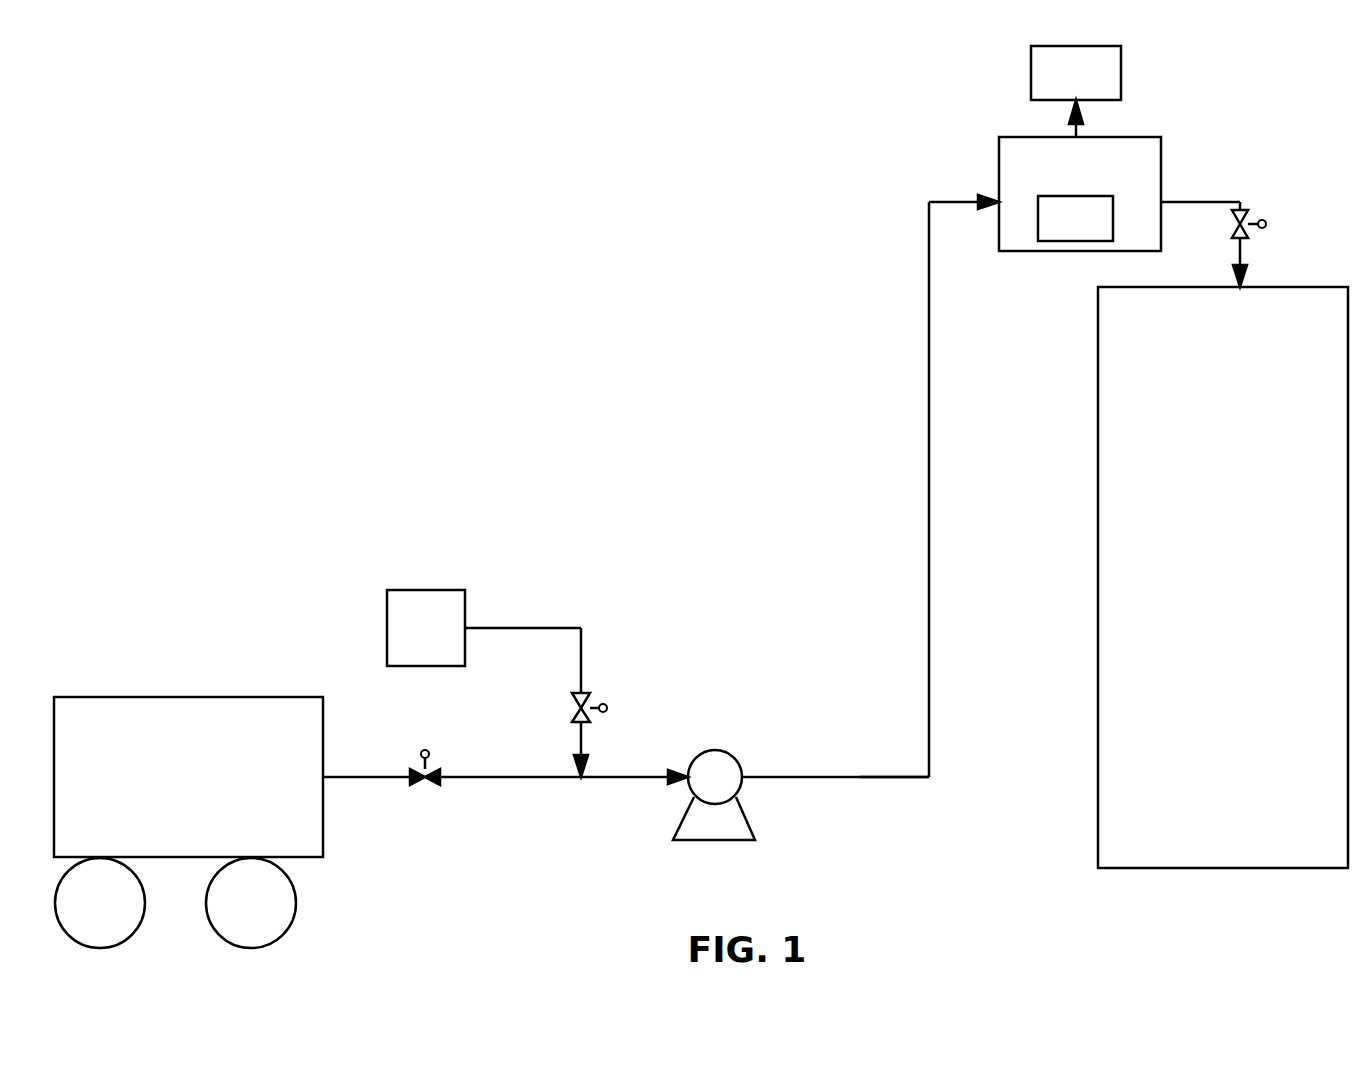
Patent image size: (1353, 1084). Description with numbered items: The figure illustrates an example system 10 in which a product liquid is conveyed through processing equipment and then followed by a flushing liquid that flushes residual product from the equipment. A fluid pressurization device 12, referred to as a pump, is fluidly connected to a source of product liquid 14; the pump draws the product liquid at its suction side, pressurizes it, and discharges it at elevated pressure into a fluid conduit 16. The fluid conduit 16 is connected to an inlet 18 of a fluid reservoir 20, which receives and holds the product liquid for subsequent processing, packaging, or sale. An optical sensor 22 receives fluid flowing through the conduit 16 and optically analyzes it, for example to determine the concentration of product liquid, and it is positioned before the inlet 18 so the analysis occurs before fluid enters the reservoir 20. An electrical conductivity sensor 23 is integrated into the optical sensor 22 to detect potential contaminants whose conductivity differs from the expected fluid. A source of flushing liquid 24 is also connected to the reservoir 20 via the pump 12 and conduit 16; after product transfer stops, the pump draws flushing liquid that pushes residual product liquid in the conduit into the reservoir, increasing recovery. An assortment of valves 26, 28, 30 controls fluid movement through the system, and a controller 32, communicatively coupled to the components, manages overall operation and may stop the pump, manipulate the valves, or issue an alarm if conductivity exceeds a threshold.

The system 10 is at (1313, 96).
The fluid pressurization device 12 is at (700, 789).
The source of product liquid 14 is at (157, 781).
The fluid conduit 16 is at (897, 779).
The inlet 18 is at (1246, 262).
The fluid reservoir 20 is at (1208, 589).
The optical sensor 22 is at (1059, 182).
The electrical conductivity sensor 23 is at (1061, 232).
The source of flushing liquid 24 is at (412, 640).
The valve 26 is at (571, 708).
The valve 28 is at (427, 790).
The valve 30 is at (1267, 224).
The controller 32 is at (1061, 85).